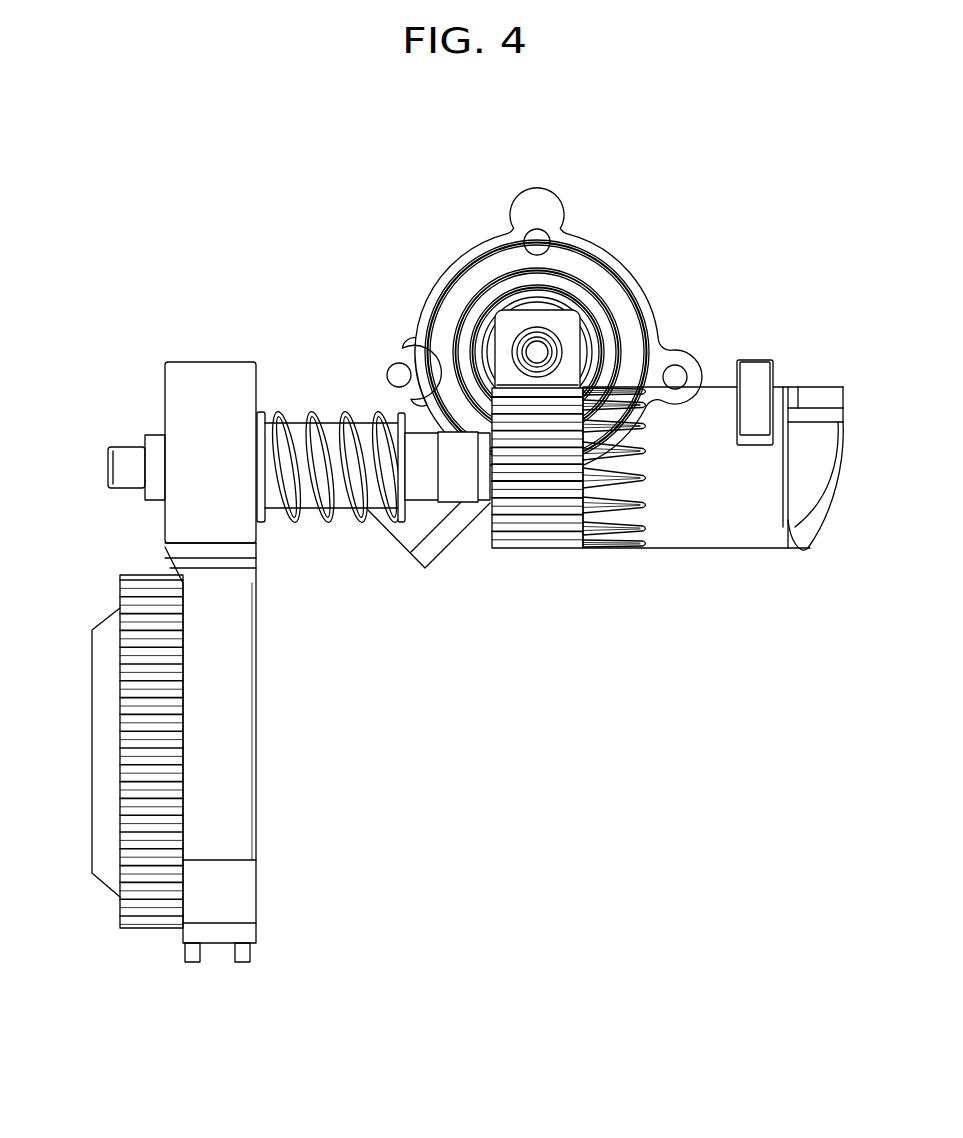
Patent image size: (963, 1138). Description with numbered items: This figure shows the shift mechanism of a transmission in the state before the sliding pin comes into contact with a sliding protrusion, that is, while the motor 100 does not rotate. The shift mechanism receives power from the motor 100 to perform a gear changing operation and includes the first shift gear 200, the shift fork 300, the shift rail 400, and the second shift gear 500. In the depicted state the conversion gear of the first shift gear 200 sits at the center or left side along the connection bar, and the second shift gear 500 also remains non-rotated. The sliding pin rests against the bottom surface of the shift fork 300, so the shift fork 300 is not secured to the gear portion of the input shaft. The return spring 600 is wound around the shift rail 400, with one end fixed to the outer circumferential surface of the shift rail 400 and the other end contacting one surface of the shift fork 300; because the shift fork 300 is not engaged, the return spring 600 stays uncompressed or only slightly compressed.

The motor 100 is at (425, 553).
The first shift gear 200 is at (547, 300).
The shift fork 300 is at (208, 368).
The shift rail 400 is at (490, 470).
The second shift gear 500 is at (712, 542).
The return spring 600 is at (313, 412).